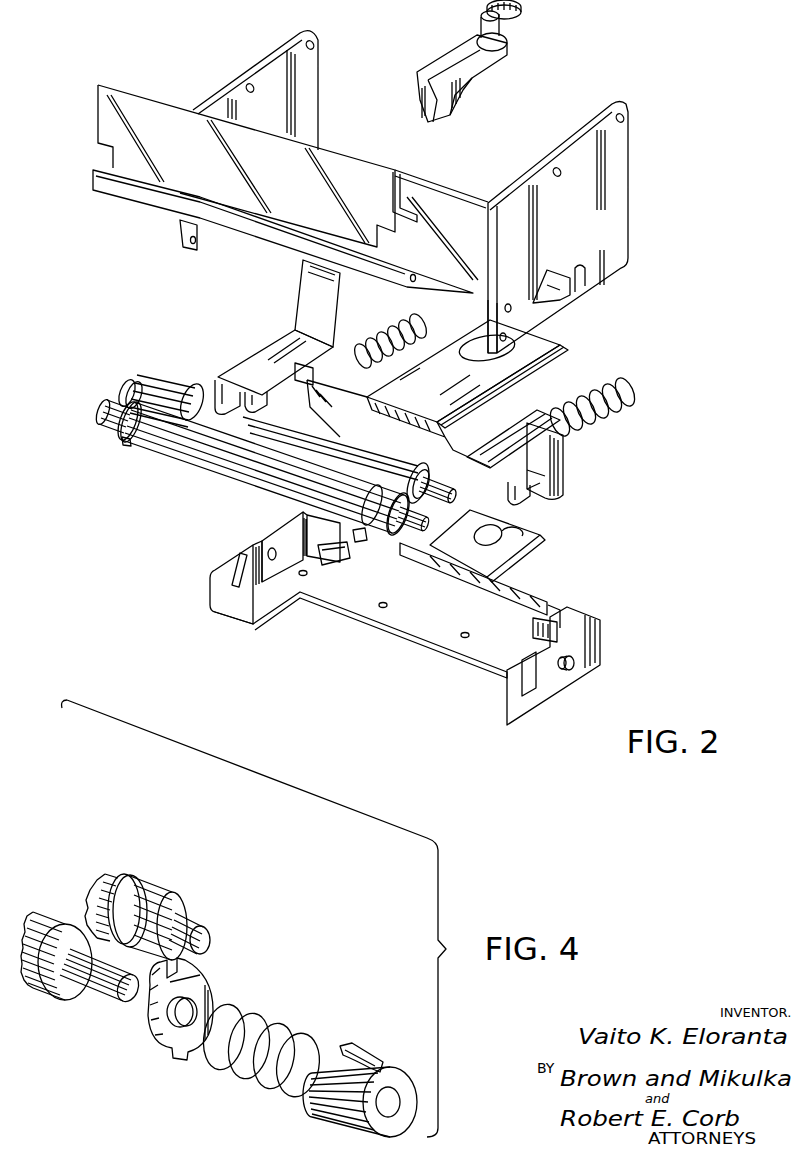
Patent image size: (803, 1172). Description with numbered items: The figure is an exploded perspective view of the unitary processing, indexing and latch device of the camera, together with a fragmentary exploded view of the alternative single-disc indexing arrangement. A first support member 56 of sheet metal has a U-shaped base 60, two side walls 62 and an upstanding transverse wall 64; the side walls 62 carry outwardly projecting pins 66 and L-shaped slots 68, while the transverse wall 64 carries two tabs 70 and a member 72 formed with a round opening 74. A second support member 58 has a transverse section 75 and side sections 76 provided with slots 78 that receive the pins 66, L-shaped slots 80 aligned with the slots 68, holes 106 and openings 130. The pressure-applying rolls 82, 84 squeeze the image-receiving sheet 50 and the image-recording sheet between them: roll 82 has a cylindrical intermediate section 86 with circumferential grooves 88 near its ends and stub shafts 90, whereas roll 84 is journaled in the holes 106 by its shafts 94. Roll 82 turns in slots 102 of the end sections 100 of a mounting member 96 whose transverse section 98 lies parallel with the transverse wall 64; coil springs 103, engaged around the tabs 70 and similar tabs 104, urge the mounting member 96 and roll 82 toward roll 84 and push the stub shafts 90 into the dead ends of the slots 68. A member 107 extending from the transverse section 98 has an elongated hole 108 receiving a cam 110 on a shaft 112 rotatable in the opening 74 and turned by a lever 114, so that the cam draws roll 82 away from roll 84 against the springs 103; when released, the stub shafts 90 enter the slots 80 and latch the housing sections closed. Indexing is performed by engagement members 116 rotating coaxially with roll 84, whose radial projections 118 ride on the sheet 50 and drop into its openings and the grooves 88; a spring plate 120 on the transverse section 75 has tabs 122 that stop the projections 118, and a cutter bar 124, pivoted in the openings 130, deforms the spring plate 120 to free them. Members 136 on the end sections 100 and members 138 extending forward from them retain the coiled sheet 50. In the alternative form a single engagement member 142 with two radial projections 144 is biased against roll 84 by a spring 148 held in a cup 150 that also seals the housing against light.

In FIG. 2, the image-receiving sheet 50 is at (394, 530).
In FIG. 2, the first support member 56 is at (412, 613).
In FIG. 2, the second support member 58 is at (439, 192).
In FIG. 2, the U-shaped base 60 is at (398, 612).
In FIG. 2, the side walls 62 is at (257, 538).
In FIG. 2, the transverse wall 64 is at (535, 598).
In FIG. 2, the pins 66 is at (274, 548).
In FIG. 2, the L-shaped slots 68 is at (234, 566).
In FIG. 2, the tabs 70 is at (306, 556).
In FIG. 2, the member 72 is at (496, 541).
In FIG. 2, the round opening 74 is at (522, 548).
In FIG. 2, the transverse section 75 is at (455, 212).
In FIG. 2, the side sections 76 is at (305, 101).
In FIG. 2, the slots 78 is at (583, 265).
In FIG. 2, the L-shaped slots 80 is at (553, 282).
In FIG. 2, the roll 82 is at (290, 431).
In FIG. 4, the roll 82 is at (164, 893).
In FIG. 2, the roll 84 is at (264, 490).
In FIG. 4, the roll 84 is at (62, 918).
In FIG. 2, the intermediate section 86 is at (180, 388).
In FIG. 4, the intermediate section 86 is at (121, 872).
In FIG. 2, the circumferential grooves 88 is at (122, 382).
In FIG. 4, the circumferential grooves 88 is at (122, 900).
In FIG. 2, the stub shafts 90 is at (458, 500).
In FIG. 4, the stub shafts 90 is at (205, 944).
In FIG. 2, the shafts 94 is at (99, 408).
In FIG. 4, the shafts 94 is at (124, 992).
In FIG. 2, the mounting member 96 is at (570, 462).
In FIG. 2, the transverse section 98 is at (470, 381).
In FIG. 2, the end sections 100 is at (236, 390).
In FIG. 2, the slots 102 is at (216, 386).
In FIG. 2, the coil springs 103 is at (400, 320).
In FIG. 2, the tabs 104 is at (314, 380).
In FIG. 2, the holes 106 is at (508, 302).
In FIG. 2, the member 107 is at (533, 360).
In FIG. 2, the elongated hole 108 is at (528, 352).
In FIG. 2, the cam 110 is at (512, 16).
In FIG. 2, the shaft 112 is at (480, 28).
In FIG. 2, the lever 114 is at (488, 61).
In FIG. 2, the engagement members 116 is at (121, 416).
In FIG. 2, the radial projections 118 is at (123, 441).
In FIG. 2, the spring plate 120 is at (150, 132).
In FIG. 2, the tabs 122 is at (405, 214).
In FIG. 2, the cutter bar 124 is at (248, 232).
In FIG. 2, the openings 130 is at (488, 333).
In FIG. 2, the members 136 is at (297, 345).
In FIG. 2, the members 138 is at (311, 288).
In FIG. 4, the engagement member 142 is at (205, 1031).
In FIG. 4, the radial projections 144 is at (178, 970).
In FIG. 4, the spring 148 is at (290, 1025).
In FIG. 4, the cup 150 is at (325, 1108).